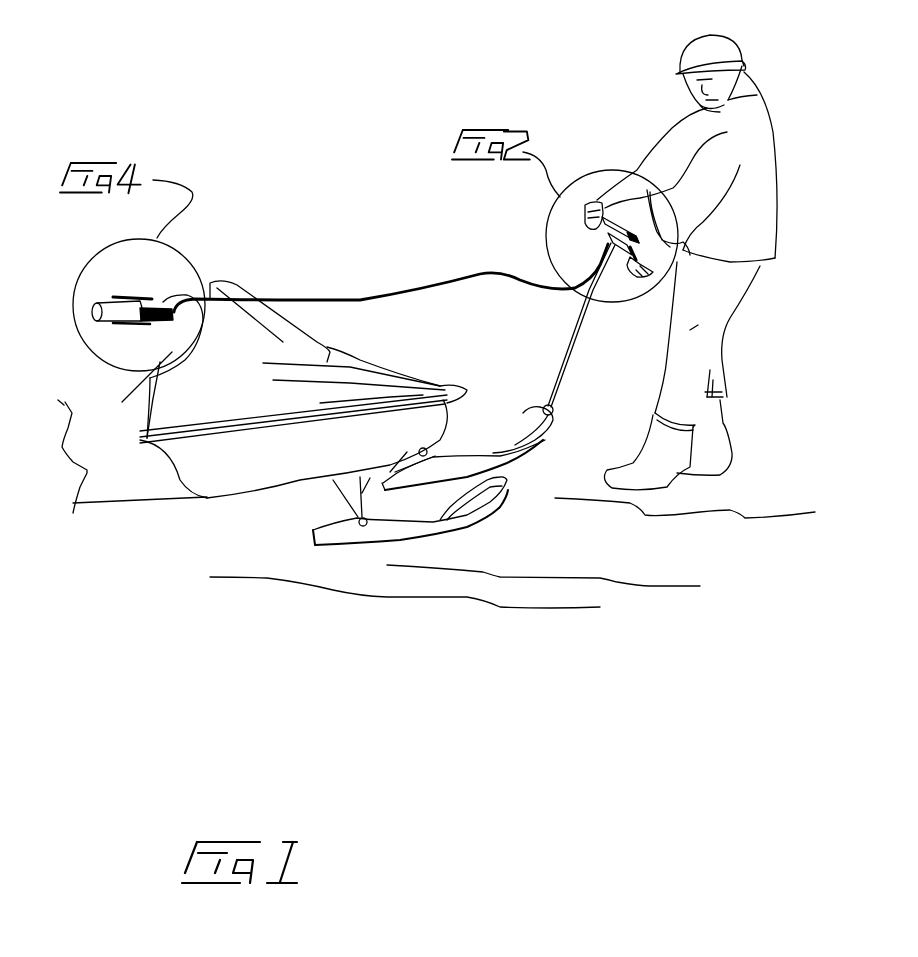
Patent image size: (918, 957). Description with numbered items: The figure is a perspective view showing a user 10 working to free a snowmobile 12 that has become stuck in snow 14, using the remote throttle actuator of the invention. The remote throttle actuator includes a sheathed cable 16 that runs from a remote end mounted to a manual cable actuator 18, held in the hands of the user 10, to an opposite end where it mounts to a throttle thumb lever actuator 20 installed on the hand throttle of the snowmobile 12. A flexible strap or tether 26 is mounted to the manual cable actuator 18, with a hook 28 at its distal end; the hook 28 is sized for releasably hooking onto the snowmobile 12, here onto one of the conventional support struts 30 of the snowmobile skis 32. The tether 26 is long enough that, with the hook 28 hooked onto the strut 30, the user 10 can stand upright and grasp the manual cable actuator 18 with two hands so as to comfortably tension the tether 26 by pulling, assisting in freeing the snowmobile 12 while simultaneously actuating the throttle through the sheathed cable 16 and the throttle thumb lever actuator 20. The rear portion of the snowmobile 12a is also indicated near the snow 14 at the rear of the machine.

The user / person 10 is at (763, 103).
The sled / snowmobile 12 is at (377, 353).
The rear portion of sled 12a is at (120, 468).
The snow surface / ground 14 is at (635, 567).
The tow rope 16 is at (427, 287).
The handle 18 is at (633, 210).
The clamp attachment 20 is at (152, 297).
The steering tether line 26 is at (573, 346).
The connector ring 28 is at (554, 408).
The ski tip loop 30 is at (527, 415).
The ski 32 is at (533, 450).